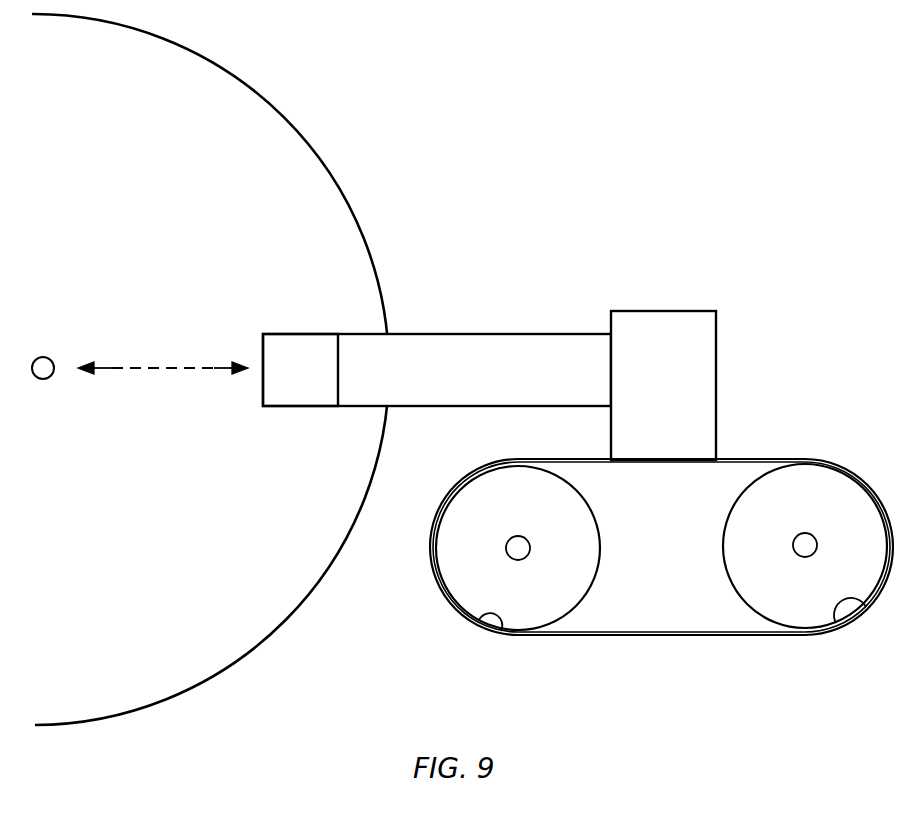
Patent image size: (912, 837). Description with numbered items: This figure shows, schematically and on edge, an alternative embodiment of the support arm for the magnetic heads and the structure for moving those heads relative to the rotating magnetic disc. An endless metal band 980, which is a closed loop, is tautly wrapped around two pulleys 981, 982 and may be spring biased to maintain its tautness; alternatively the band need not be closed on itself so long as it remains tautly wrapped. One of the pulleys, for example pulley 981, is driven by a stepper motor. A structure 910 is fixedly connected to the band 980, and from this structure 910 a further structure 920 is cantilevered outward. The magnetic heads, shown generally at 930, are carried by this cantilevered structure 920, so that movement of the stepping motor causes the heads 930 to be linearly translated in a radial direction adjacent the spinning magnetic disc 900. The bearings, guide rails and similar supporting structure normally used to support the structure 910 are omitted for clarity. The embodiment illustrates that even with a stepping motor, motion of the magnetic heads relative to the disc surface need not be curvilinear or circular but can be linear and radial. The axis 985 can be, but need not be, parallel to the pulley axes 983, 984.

The spinning magnetic disc 900 is at (157, 33).
The structure fixedly connected to band 910 is at (697, 309).
The cantilevered structure 920 is at (505, 334).
The magnetic heads 930 is at (305, 333).
The endless metal band 980 is at (745, 459).
The pulley 981 is at (860, 604).
The pulley 982 is at (503, 634).
The axis 983 is at (811, 556).
The axis 984 is at (518, 560).
The axis 985 is at (43, 356).